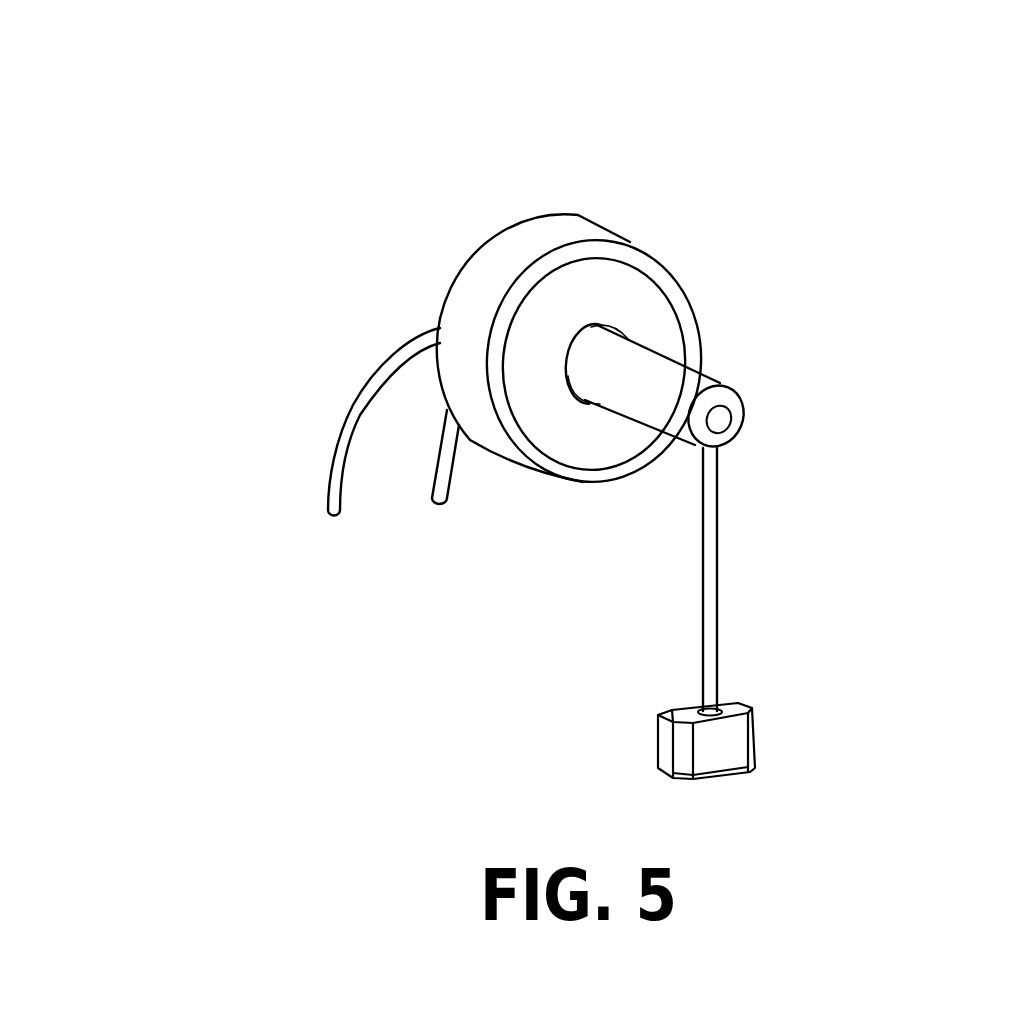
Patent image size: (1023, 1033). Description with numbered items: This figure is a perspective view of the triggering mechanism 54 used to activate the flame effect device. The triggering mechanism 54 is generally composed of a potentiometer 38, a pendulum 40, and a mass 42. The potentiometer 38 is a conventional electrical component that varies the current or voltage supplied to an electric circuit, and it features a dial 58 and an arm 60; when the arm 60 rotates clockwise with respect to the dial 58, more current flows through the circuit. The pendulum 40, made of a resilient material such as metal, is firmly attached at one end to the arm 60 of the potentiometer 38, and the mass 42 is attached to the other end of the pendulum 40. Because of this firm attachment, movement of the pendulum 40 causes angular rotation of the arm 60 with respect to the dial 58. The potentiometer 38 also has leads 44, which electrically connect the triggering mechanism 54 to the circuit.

The triggering mechanism 54 is at (493, 218).
The potentiometer 38 is at (685, 280).
The dial 58 is at (575, 428).
The arm 60 is at (667, 387).
The leads 44 is at (437, 493).
The pendulum 40 is at (707, 577).
The mass 42 is at (683, 748).